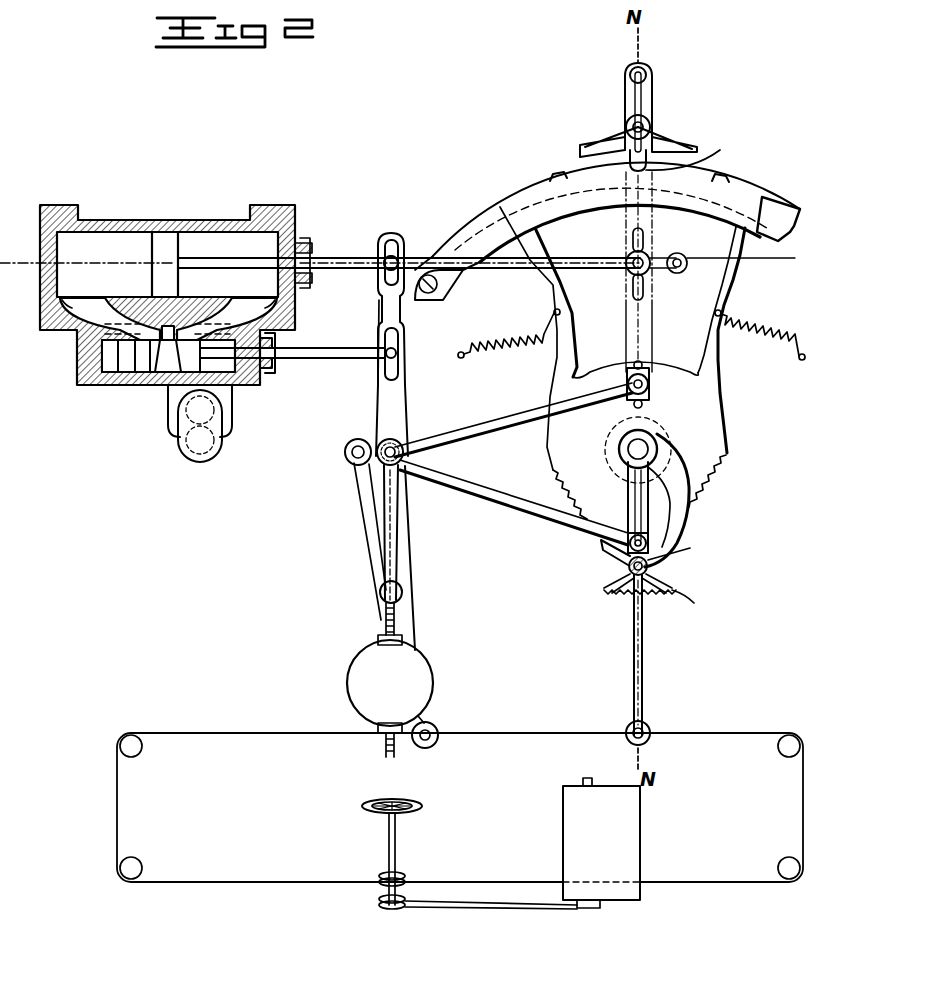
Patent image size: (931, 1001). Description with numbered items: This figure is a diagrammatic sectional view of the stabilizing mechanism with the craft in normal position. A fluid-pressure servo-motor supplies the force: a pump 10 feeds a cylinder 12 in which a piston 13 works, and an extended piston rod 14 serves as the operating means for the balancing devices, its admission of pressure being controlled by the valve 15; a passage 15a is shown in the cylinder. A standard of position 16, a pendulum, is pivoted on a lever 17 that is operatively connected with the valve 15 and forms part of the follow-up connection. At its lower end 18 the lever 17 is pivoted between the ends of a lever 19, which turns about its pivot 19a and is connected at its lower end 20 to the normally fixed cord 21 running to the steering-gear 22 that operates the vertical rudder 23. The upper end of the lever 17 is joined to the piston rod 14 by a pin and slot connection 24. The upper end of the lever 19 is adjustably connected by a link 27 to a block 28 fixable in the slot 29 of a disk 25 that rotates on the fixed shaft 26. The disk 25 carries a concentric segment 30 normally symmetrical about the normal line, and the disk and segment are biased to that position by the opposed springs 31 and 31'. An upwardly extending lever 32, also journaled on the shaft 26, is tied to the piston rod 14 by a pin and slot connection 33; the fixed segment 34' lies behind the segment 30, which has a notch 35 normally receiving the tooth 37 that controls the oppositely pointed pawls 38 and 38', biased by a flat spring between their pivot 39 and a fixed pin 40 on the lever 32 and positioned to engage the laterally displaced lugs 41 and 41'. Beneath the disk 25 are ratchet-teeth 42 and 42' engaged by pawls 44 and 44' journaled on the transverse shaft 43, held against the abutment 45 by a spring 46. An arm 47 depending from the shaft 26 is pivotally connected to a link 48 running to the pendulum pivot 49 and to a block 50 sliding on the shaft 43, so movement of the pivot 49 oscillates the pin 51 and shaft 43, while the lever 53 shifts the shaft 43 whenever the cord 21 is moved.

The pump 10 is at (178, 446).
The cylinder 12 is at (105, 238).
The piston 13 is at (165, 238).
The piston rod 14 is at (682, 274).
The valve 15 is at (145, 365).
The port passage 15a is at (242, 316).
The standard of position 16 is at (380, 411).
The lever 17 is at (403, 408).
The lower end of lever 18 is at (402, 597).
The lever 19 is at (368, 545).
The pivot 19a is at (349, 448).
The lower end of lever 20 is at (437, 728).
The cord 21 is at (530, 736).
The steering-gear 22 is at (388, 842).
The vertical rudder 23 is at (575, 826).
The pin and slot connection 24 is at (405, 256).
The disk 25 is at (700, 437).
The fixed shaft 26 is at (627, 452).
The link 27 is at (495, 415).
The block 28 is at (624, 405).
The slot 29 is at (648, 404).
The concentric segment 30 is at (740, 206).
The spring 31 is at (509, 329).
The spring 31' is at (760, 327).
The upwardly extending lever 32 is at (652, 100).
The pin and slot connection 33 is at (649, 257).
The arc extension 34' is at (454, 227).
The notch 35 is at (696, 147).
The tooth 37 is at (630, 158).
The pawl 38 is at (596, 138).
The pawl 38' is at (678, 132).
The pivot 39 is at (630, 126).
The fixed pin 40 is at (645, 72).
The lug 41 is at (543, 164).
The lug 41' is at (740, 163).
The ratchet-teeth 42 is at (556, 494).
The ratchet-teeth 42' is at (724, 481).
The transverse shaft 43 is at (650, 567).
The pawl 44 is at (603, 560).
The pawl 44' is at (693, 549).
The abutment 45 is at (631, 590).
The spring 46 is at (656, 592).
The arm 47 is at (629, 503).
The link 48 is at (526, 508).
The pivot 49 is at (404, 453).
The block 50 is at (650, 540).
The pin 51 is at (635, 519).
The lever 53 is at (634, 682).